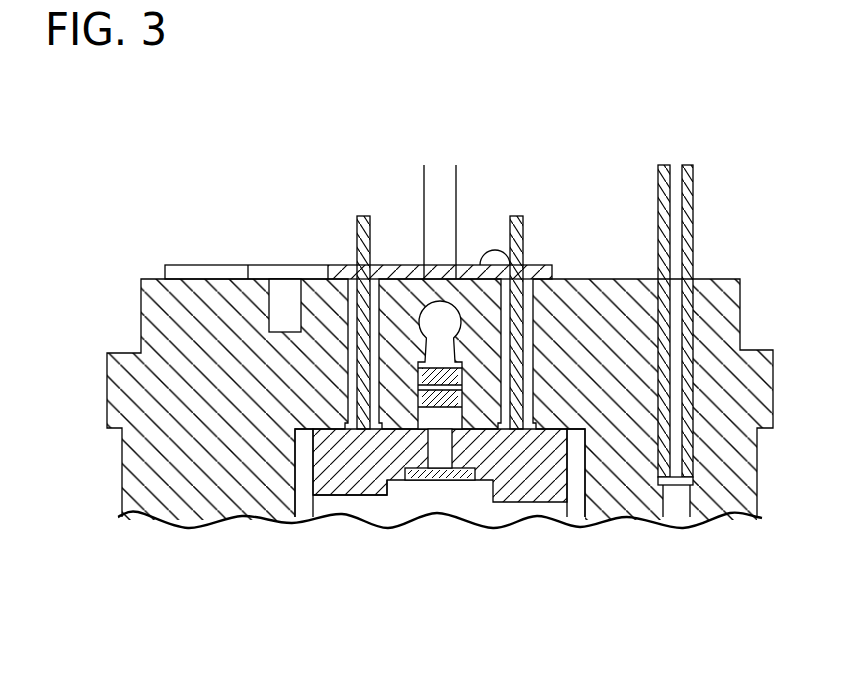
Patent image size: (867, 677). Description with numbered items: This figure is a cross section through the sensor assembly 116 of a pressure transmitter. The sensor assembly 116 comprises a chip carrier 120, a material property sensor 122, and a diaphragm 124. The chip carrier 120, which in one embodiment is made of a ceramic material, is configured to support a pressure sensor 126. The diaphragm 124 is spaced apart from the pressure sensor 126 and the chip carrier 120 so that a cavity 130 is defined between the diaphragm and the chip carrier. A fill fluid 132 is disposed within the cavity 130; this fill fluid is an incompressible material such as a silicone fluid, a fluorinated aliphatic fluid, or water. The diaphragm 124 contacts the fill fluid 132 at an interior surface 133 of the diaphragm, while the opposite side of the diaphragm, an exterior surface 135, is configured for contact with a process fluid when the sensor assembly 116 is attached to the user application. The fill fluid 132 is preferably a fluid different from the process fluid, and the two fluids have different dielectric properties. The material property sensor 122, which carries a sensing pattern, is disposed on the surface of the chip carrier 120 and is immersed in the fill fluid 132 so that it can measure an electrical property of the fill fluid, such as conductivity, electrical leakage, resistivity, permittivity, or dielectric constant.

The sensor assembly 116 is at (121, 471).
The chip carrier 120 is at (566, 482).
The material property sensor 122 is at (515, 503).
The diaphragm 124 is at (187, 527).
The pressure sensor 126 is at (417, 482).
The cavity 130 is at (359, 501).
The fill fluid 132 is at (310, 506).
The interior surface 133 is at (621, 505).
The exterior surface 135 is at (713, 527).